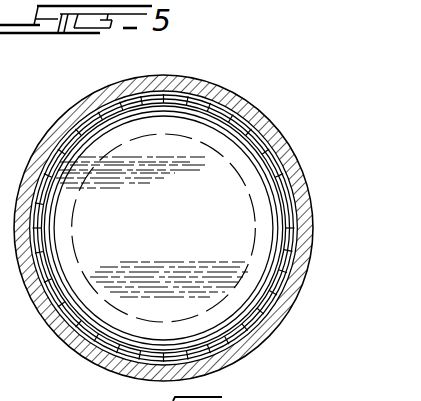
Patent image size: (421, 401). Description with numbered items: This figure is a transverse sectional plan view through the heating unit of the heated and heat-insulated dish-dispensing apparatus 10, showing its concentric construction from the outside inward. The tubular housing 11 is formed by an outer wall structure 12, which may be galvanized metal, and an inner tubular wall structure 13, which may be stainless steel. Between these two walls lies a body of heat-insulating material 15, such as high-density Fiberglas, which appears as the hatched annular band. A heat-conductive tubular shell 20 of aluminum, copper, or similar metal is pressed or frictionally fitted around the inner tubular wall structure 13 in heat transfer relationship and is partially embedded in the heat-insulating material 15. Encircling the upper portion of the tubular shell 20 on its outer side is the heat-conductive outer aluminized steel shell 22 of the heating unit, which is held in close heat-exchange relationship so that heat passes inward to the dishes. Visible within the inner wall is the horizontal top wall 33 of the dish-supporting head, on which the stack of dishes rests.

The heated and heat-insulated dish-dispensing apparatus 10 is at (278, 124).
The tubular housing 11 is at (305, 164).
The outer wall structure 12 is at (311, 267).
The inner tubular wall structure 13 is at (238, 114).
The heat-insulating material 15 is at (302, 213).
The heat-conductive tubular shell 20 is at (204, 86).
The outer aluminized steel shell 22 is at (180, 87).
The horizontal top wall 33 is at (284, 160).